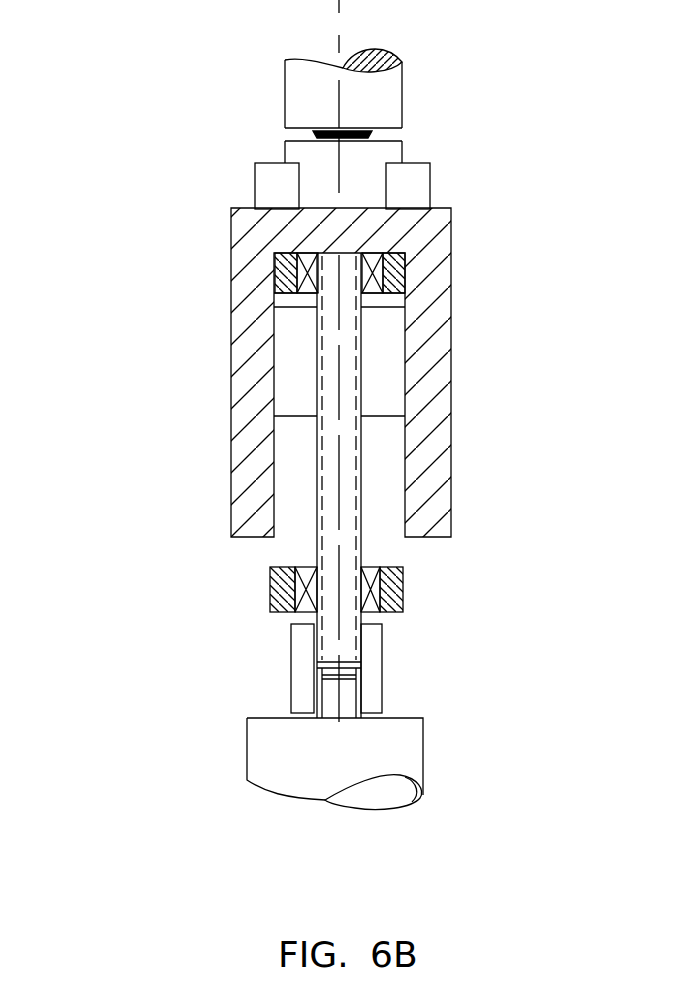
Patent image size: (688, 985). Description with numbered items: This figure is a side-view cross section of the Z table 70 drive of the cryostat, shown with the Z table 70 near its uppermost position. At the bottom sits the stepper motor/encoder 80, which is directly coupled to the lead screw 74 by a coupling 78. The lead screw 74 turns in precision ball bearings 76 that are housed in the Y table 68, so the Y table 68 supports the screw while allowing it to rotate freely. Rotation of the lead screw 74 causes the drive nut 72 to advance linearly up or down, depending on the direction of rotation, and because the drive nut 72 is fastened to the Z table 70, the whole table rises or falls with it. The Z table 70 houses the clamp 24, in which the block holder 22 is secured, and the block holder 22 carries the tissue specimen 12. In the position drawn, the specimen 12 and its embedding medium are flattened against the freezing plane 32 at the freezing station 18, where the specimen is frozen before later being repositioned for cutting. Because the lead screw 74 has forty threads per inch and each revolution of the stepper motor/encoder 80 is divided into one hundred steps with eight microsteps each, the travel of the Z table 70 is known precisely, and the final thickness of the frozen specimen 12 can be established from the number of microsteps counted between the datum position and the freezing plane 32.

The specimen 12 is at (327, 100).
The freezing station 18 is at (432, 97).
The block holder 22 is at (432, 153).
The clamp 24 is at (228, 185).
The freezing plane 32 is at (255, 133).
The Y table 68 is at (422, 281).
The Z table 70 is at (481, 416).
The drive nut 72 is at (415, 357).
The lead screw 74 is at (390, 479).
The precision ball bearings 76 is at (425, 593).
The coupling 78 is at (412, 671).
The stepper motor/encoder 80 is at (453, 752).